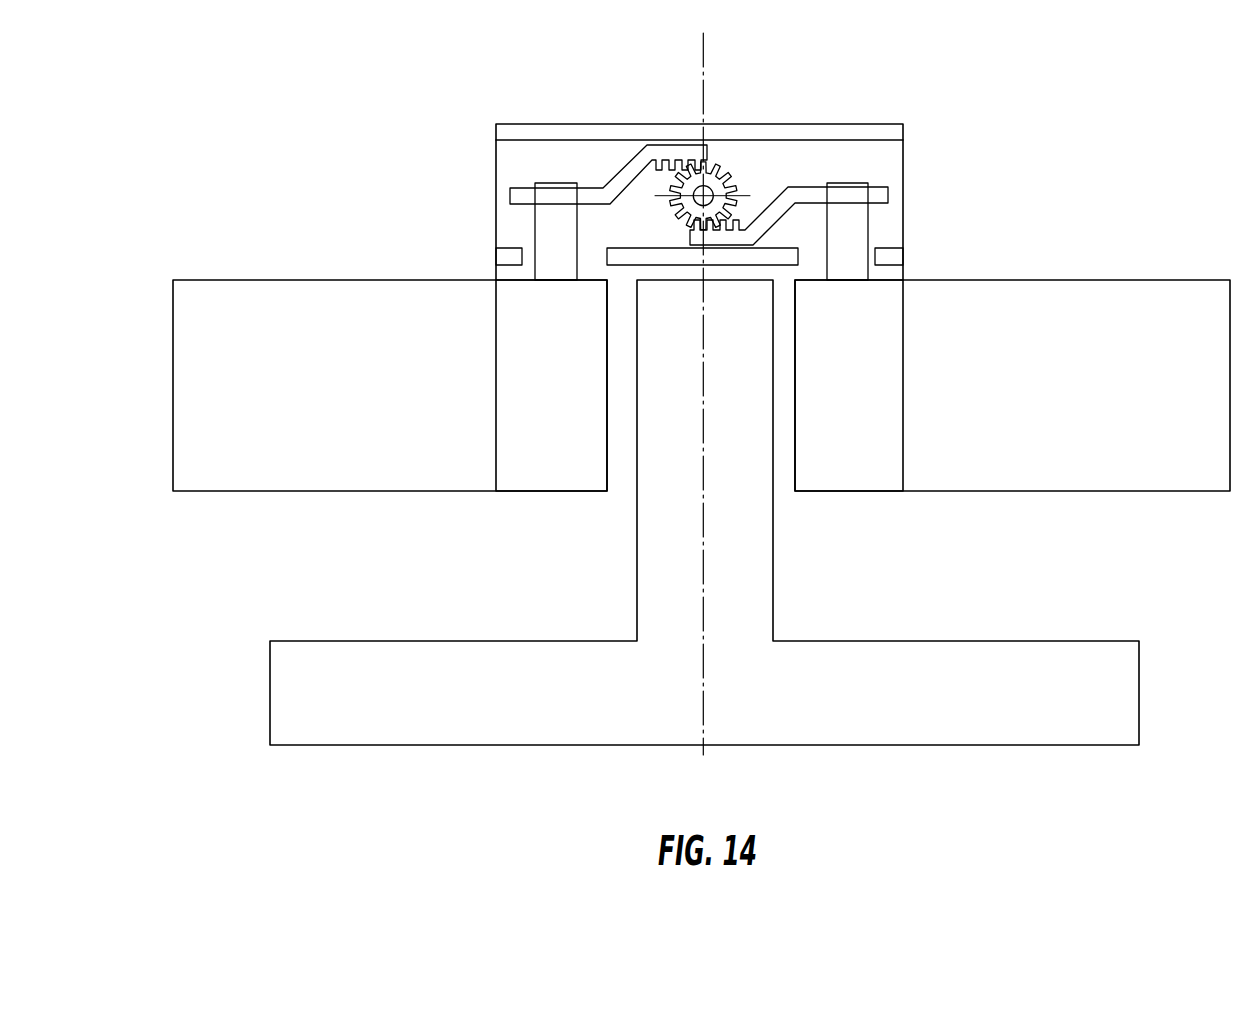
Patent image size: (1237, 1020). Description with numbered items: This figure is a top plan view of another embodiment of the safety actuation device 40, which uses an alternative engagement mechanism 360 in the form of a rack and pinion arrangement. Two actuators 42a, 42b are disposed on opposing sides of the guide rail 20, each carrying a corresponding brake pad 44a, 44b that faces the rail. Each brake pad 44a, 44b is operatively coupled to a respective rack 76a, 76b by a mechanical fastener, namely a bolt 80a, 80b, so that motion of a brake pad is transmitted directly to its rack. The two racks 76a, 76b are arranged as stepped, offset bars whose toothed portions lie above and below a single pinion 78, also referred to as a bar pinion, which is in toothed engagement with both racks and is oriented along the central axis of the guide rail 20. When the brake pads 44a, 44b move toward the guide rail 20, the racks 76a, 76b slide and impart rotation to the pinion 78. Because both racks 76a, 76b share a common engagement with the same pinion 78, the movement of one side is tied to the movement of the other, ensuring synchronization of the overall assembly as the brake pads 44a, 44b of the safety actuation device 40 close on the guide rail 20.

The guide rail 20 is at (552, 728).
The safety actuation device 40 is at (291, 149).
The actuator 42a is at (306, 478).
The actuator 42b is at (1143, 485).
The brake pad 44a is at (543, 478).
The brake pad 44b is at (855, 485).
The rack 76a is at (615, 182).
The rack 76b is at (812, 193).
The pinion 78 is at (732, 170).
The bolt 80a is at (552, 225).
The bolt 80b is at (848, 237).
The engagement mechanism 360 is at (501, 90).